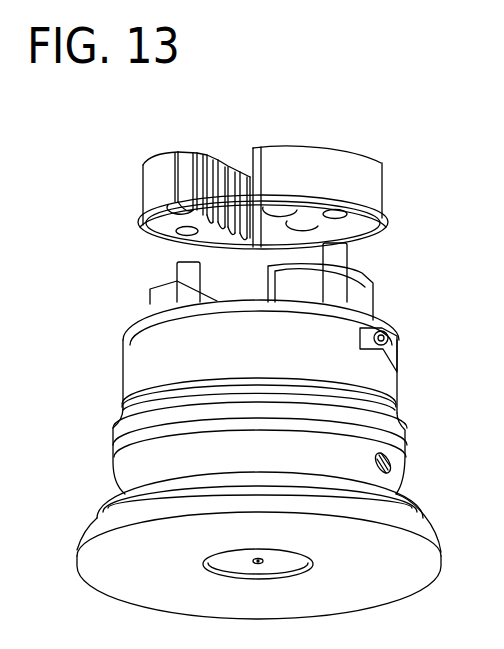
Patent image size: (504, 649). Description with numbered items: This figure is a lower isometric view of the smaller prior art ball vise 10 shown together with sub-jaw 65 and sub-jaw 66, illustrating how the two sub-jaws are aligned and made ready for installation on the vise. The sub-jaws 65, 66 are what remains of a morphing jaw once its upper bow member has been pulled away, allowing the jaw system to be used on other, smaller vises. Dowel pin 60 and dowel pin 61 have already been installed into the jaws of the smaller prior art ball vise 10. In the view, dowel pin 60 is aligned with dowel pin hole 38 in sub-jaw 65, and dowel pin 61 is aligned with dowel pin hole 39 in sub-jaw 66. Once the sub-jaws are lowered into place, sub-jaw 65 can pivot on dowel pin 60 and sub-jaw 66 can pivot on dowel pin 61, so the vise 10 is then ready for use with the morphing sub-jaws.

The smaller prior art ball vise 10 is at (86, 376).
The dowel pin hole 38 is at (178, 232).
The dowel pin hole 39 is at (345, 217).
The dowel pin 60 is at (163, 190).
The dowel pin 61 is at (355, 170).
The sub-jaw 65 is at (172, 133).
The sub-jaw 66 is at (322, 120).